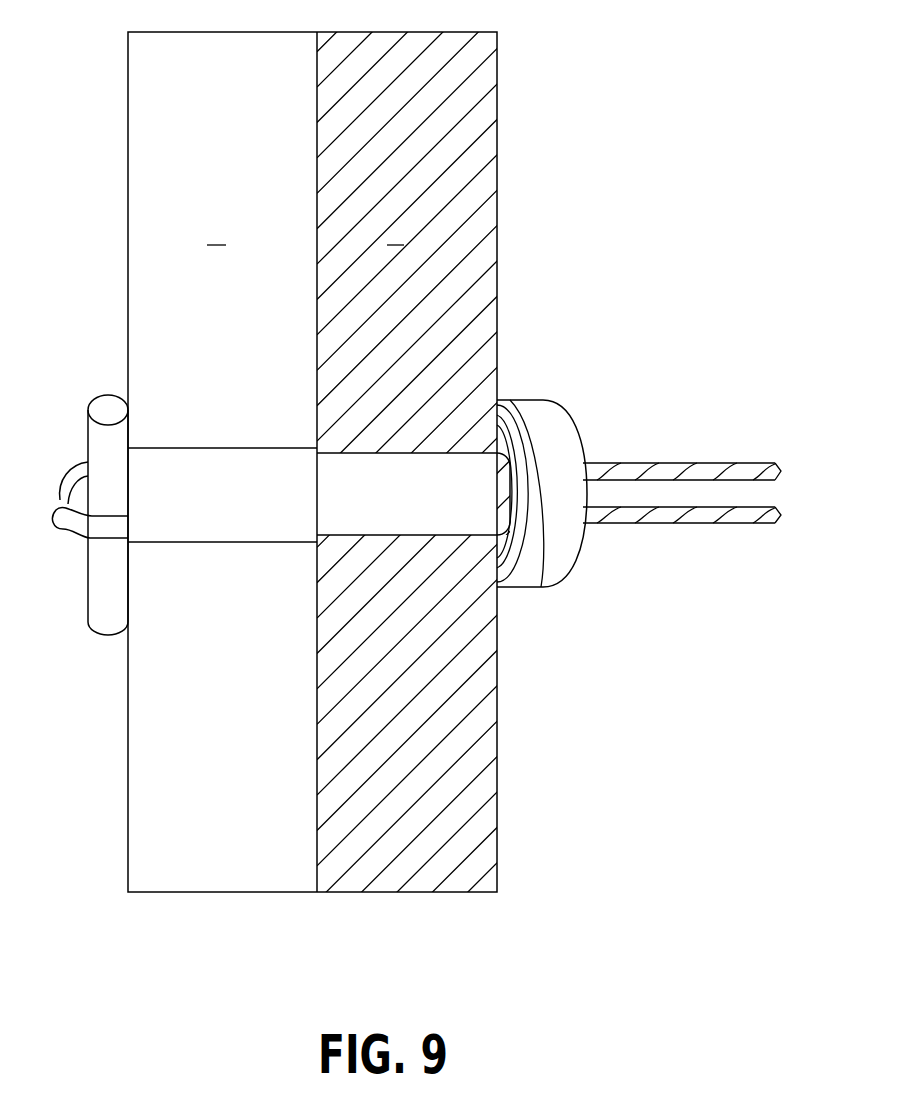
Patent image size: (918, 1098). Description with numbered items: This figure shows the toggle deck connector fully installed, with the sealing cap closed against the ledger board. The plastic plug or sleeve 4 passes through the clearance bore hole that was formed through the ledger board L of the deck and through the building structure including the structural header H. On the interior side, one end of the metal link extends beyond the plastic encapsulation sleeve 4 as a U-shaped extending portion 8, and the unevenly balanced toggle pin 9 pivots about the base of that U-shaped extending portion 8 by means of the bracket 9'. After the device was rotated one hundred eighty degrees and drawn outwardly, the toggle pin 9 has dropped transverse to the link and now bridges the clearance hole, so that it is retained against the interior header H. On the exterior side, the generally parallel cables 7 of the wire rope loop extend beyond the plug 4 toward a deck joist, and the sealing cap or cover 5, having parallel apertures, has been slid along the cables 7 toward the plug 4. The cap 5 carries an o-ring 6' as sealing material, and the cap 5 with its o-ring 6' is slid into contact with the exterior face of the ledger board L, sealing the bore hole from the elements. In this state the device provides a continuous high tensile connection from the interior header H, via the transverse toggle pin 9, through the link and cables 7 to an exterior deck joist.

The plastic plug or sleeve 4 is at (406, 503).
The sealing cap or cover 5 is at (542, 400).
The o-ring 6' is at (528, 539).
The cables 7 is at (673, 463).
The U-shaped extending portion 8 is at (182, 448).
The toggle pin 9 is at (96, 554).
The bracket 9' is at (50, 458).
The structural header H is at (217, 232).
The ledger board L is at (395, 231).